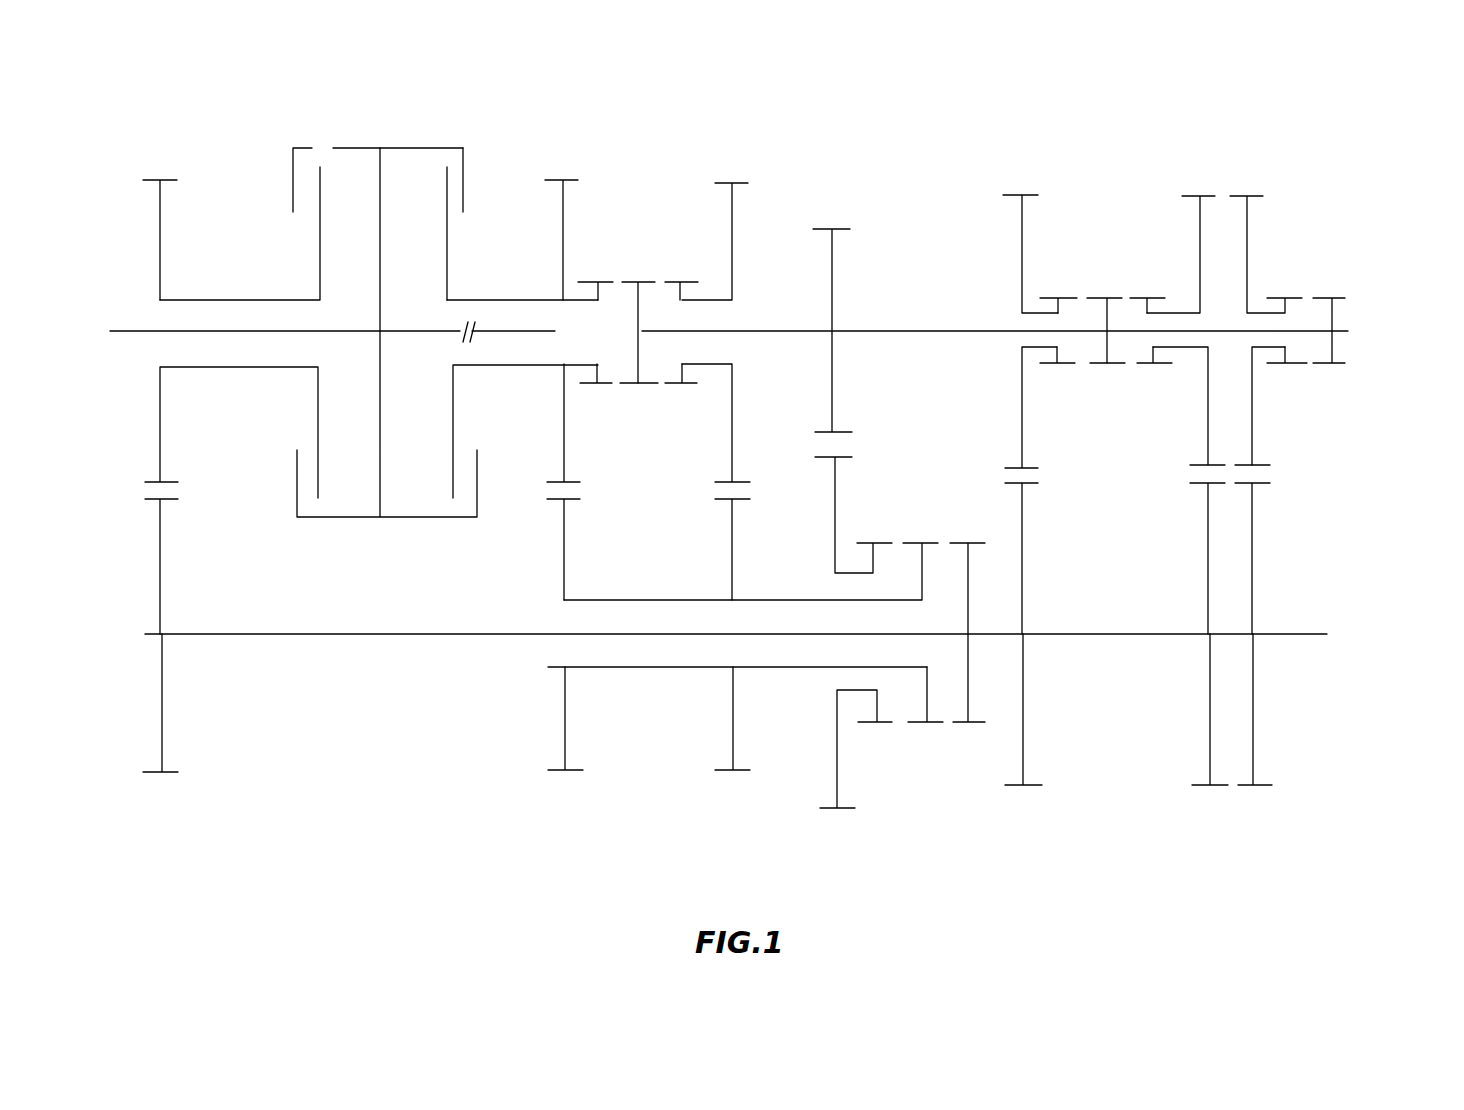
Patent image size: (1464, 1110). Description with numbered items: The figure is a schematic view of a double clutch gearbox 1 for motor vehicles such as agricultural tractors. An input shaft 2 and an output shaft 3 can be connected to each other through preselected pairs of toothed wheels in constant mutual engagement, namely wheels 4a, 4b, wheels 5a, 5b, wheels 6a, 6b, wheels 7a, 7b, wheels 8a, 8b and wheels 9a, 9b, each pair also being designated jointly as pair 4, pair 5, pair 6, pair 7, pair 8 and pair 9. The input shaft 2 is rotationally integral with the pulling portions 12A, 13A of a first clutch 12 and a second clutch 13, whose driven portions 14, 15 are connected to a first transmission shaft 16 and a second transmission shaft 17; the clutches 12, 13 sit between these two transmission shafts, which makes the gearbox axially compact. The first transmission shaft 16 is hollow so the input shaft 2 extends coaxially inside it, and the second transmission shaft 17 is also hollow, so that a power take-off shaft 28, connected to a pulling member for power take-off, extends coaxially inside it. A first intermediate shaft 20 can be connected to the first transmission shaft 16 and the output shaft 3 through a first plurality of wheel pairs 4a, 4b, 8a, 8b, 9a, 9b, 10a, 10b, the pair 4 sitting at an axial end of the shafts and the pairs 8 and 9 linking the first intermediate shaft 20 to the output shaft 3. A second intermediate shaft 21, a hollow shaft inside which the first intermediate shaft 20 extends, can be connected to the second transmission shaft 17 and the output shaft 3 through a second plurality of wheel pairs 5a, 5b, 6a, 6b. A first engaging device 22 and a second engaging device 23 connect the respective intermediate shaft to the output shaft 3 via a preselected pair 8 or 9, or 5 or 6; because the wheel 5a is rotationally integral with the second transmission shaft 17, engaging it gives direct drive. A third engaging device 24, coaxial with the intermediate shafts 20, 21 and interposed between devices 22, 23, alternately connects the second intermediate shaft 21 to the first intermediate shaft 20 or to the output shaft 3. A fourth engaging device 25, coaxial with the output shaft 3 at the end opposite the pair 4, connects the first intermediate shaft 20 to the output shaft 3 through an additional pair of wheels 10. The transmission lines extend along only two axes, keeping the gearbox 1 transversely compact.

The double clutch gearbox 1 is at (1383, 109).
The input shaft 2 is at (292, 214).
The output shaft 3 is at (1035, 270).
The first pair of toothed wheels 4 is at (231, 624).
The toothed wheel 4a is at (150, 193).
The toothed wheel 4b is at (129, 755).
The pair of toothed wheels 5 is at (498, 624).
The toothed wheel 5a is at (598, 193).
The toothed wheel 5b is at (545, 778).
The pair of toothed wheels 6 is at (675, 627).
The toothed wheel 6a is at (732, 193).
The toothed wheel 6b is at (706, 779).
The pair of toothed wheels 7 is at (751, 345).
The toothed wheel 7a is at (845, 261).
The toothed wheel 7b is at (856, 793).
The pair of toothed wheels 8 is at (1050, 625).
The toothed wheel 8a is at (1007, 202).
The toothed wheel 8b is at (999, 769).
The pair of toothed wheels 9 is at (1153, 625).
The toothed wheel 9a is at (1169, 205).
The toothed wheel 9b is at (1190, 771).
The additional pair of wheels 10 is at (1331, 536).
The toothed wheel 10a is at (1345, 405).
The toothed wheel 10b is at (1268, 773).
The first clutch 12 is at (387, 300).
The pulling portion 12A is at (334, 148).
The second clutch 13 is at (437, 148).
The pulling portion 13A is at (492, 192).
The driven portion 14 is at (398, 116).
The driven portion 15 is at (508, 291).
The first transmission shaft 16 is at (240, 193).
The second transmission shaft 17 is at (522, 192).
The first intermediate shaft 20 is at (736, 757).
The second intermediate shaft 21 is at (737, 780).
The first engaging device 22 is at (1101, 228).
The second engaging device 23 is at (638, 234).
The third engaging device 24 is at (944, 721).
The fourth engaging device 25 is at (1336, 241).
The power take-off shaft 28 is at (538, 208).